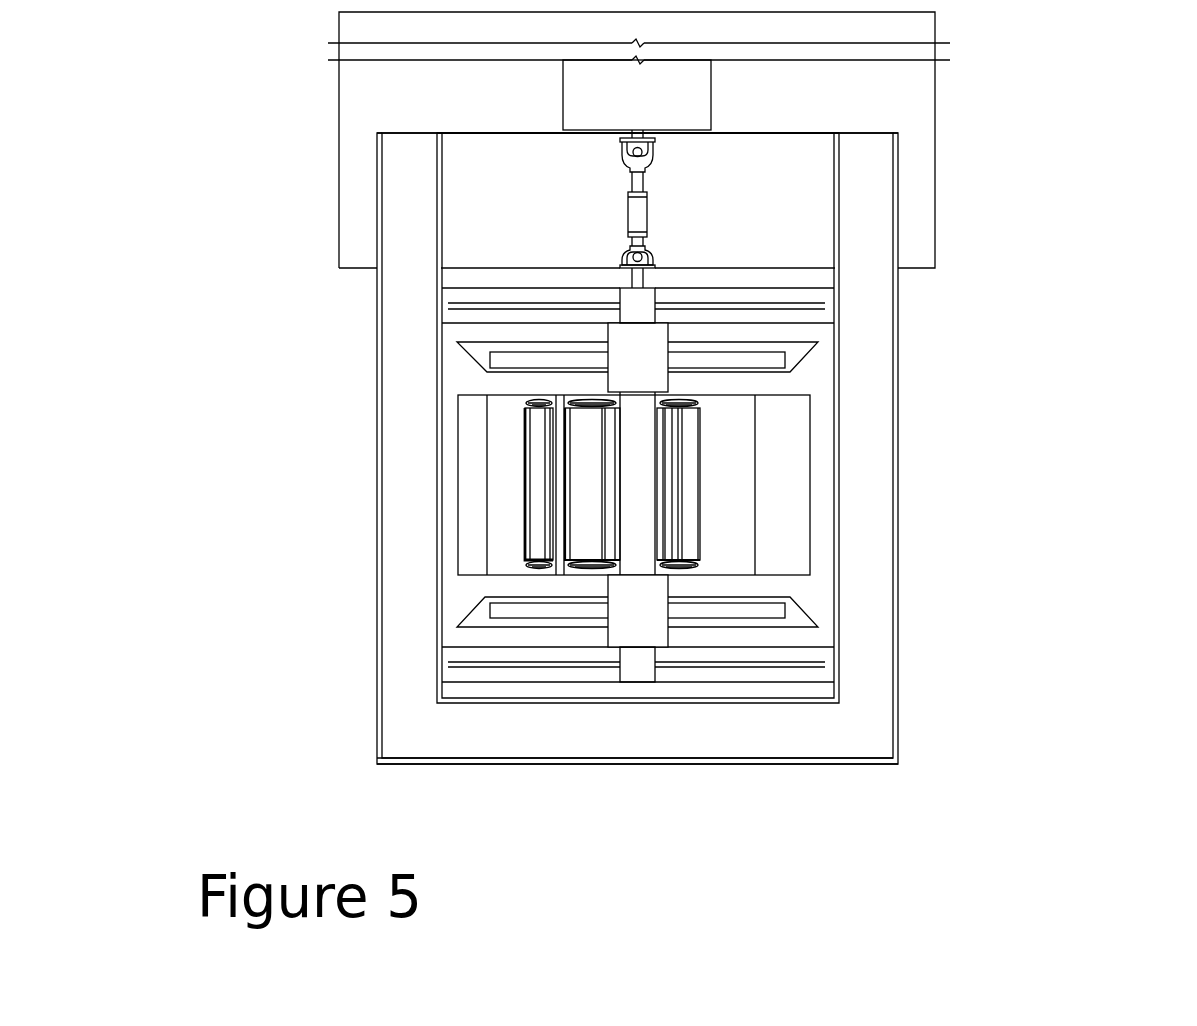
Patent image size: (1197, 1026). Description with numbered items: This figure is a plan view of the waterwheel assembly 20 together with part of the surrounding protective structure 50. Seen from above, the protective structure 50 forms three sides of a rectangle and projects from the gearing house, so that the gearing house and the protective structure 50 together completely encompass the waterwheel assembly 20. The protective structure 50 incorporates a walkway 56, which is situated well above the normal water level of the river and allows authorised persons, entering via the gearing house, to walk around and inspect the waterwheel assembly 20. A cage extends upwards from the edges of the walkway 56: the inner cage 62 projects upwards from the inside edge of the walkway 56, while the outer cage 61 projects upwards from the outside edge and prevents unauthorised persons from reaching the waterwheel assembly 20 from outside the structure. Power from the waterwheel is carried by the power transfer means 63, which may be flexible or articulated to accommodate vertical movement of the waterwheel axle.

The waterwheel assembly 20 is at (473, 380).
The protective structure 50 is at (928, 475).
The walkway 56 is at (872, 620).
The outer cage 61 is at (850, 762).
The inner cage 62 is at (835, 672).
The power transfer means 63 is at (640, 208).